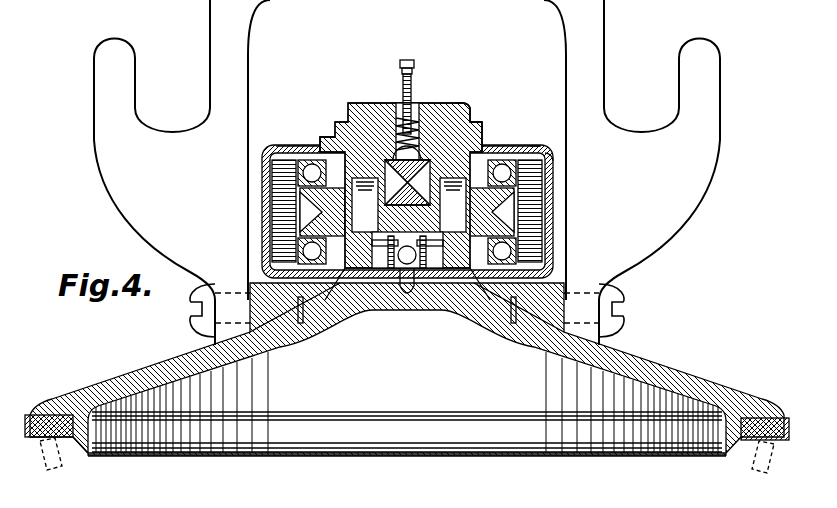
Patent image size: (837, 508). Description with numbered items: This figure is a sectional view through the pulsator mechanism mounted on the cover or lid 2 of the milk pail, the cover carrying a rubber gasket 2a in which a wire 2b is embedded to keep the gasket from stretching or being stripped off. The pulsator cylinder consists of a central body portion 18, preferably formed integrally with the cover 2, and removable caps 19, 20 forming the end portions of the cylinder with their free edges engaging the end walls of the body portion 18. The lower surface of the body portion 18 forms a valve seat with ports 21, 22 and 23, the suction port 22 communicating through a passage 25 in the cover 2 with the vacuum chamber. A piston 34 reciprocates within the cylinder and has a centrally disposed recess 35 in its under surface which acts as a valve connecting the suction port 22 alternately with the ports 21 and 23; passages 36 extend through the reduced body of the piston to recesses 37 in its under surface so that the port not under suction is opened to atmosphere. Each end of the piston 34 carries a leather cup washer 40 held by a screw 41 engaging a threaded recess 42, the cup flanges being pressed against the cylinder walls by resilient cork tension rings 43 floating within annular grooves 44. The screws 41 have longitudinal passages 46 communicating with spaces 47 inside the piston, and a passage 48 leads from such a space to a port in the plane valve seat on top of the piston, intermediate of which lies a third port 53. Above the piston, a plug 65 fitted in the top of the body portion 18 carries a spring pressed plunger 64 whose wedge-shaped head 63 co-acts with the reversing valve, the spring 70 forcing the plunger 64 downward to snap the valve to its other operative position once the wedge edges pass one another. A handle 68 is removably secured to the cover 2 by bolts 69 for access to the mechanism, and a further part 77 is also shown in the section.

The cover or lid 2 is at (667, 367).
The rubber gasket 2a is at (43, 438).
The wire 2b is at (64, 438).
The central body portion 18 is at (470, 133).
The removable cap 19 is at (316, 152).
The removable cap 20 is at (552, 148).
The port 21 is at (392, 287).
The suction port 22 is at (410, 292).
The port 23 is at (424, 292).
The passage 25 is at (406, 296).
The piston 34 is at (336, 300).
The recess 35 is at (453, 205).
The passage 36 is at (549, 220).
The recess 37 is at (466, 296).
The leather cup washer 40 is at (264, 170).
The screw 41 is at (545, 186).
The threaded recess 42 is at (296, 215).
The resilient tension ring 43 is at (320, 150).
The annular groove 44 is at (312, 243).
The longitudinal passage 46 is at (312, 205).
The space 47 is at (541, 146).
The passage 48 is at (438, 296).
The third port 53 is at (372, 298).
The wedge-shaped head 63 is at (482, 140).
The spring pressed plunger 64 is at (414, 84).
The plug 65 is at (374, 104).
The handle 68 is at (598, 251).
The bolt 69 is at (198, 321).
The spring 70 is at (452, 103).
The spacer 77 is at (365, 205).